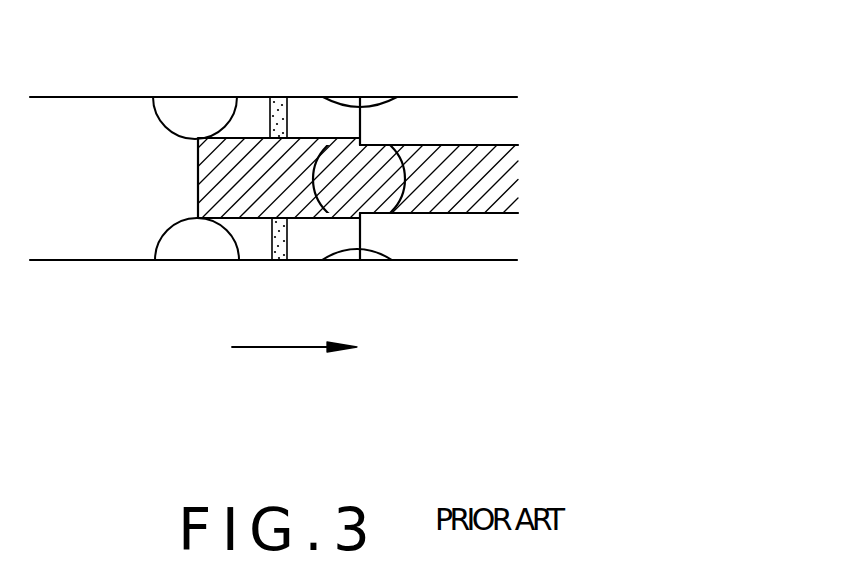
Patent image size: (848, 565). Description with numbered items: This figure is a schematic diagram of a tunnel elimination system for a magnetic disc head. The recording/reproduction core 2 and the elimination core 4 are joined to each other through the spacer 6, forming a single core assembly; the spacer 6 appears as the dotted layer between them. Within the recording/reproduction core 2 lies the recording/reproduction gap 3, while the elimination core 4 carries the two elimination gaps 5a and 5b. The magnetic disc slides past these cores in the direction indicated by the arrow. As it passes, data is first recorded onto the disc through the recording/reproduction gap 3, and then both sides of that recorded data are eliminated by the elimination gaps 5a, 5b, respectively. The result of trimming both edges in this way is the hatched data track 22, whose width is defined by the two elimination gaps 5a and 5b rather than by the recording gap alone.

The recording/reproduction core 2 is at (110, 113).
The recording/reproduction gap 3 is at (198, 184).
The elimination core 4 is at (465, 103).
The elimination gap 5a is at (410, 76).
The elimination gap 5b is at (360, 230).
The spacer 6 is at (279, 261).
The data track 22 is at (503, 172).